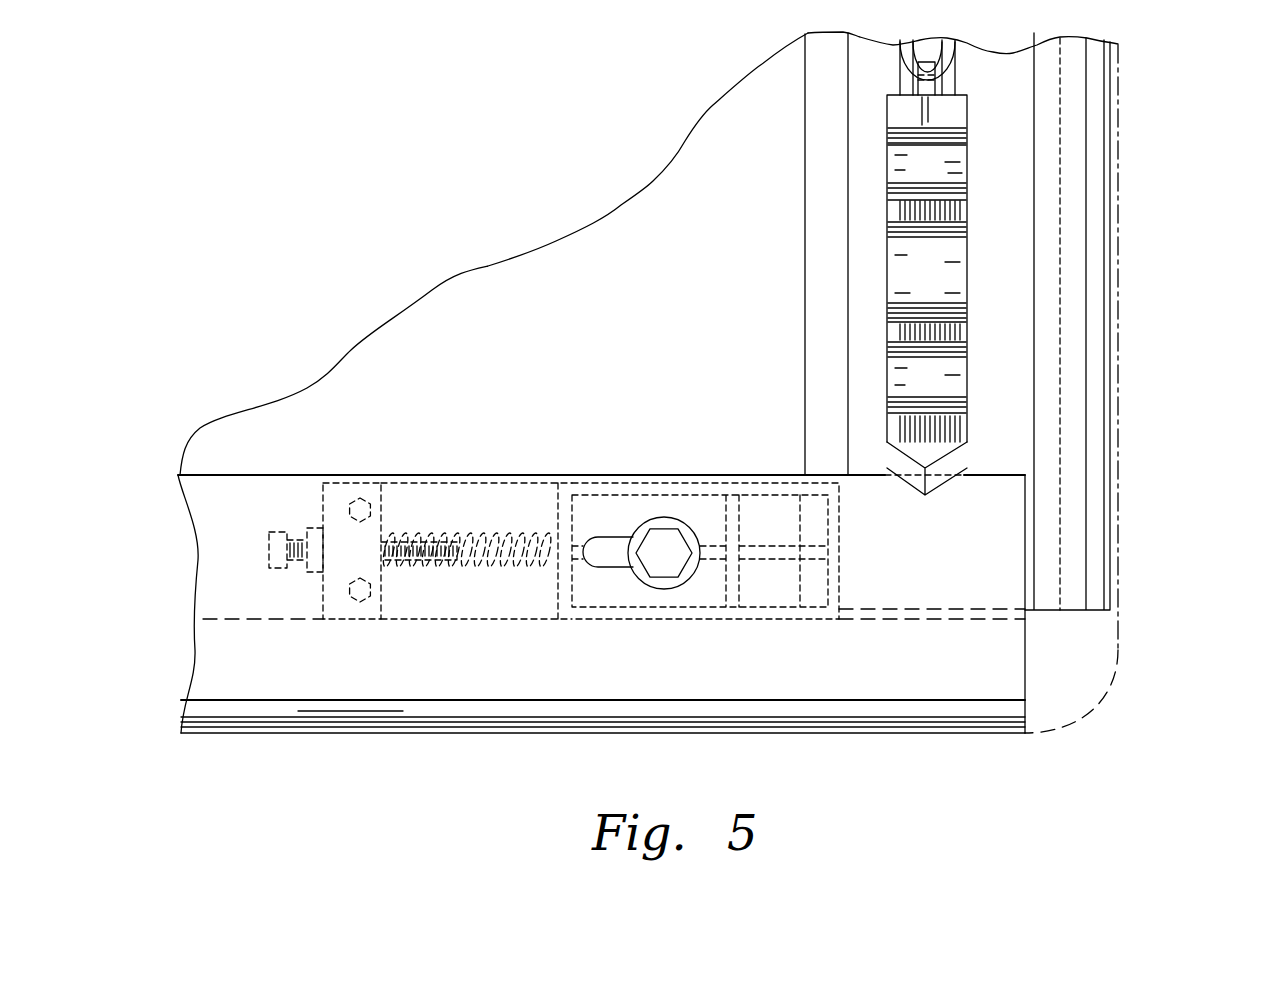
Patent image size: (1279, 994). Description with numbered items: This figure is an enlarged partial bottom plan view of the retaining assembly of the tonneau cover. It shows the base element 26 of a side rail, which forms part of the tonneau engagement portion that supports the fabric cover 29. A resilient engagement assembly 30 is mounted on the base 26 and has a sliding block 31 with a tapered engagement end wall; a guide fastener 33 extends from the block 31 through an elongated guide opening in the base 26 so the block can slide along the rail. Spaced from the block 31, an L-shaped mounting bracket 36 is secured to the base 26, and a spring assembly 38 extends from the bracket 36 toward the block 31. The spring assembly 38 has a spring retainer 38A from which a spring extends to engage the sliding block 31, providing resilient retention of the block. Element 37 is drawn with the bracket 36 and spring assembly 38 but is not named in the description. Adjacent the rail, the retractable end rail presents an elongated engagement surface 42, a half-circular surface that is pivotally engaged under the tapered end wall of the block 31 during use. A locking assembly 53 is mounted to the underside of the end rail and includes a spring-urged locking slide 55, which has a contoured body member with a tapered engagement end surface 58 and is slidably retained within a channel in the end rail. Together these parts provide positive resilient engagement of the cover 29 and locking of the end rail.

The base element 26 is at (978, 557).
The fabric cover 29 is at (1073, 672).
The resilient engagement assembly 30 is at (605, 480).
The sliding block 31 is at (683, 620).
The guide fastener 33 is at (665, 517).
The L-shaped mounting bracket 36 is at (347, 608).
The adjustment bolt 37 is at (280, 531).
The spring assembly 38 is at (470, 630).
The spring retainer 38A is at (461, 535).
The elongated engagement surface 42 is at (805, 274).
The locking assembly 53 is at (985, 277).
The locking slide 55 is at (968, 158).
The tapered engagement end surface 58 is at (948, 463).